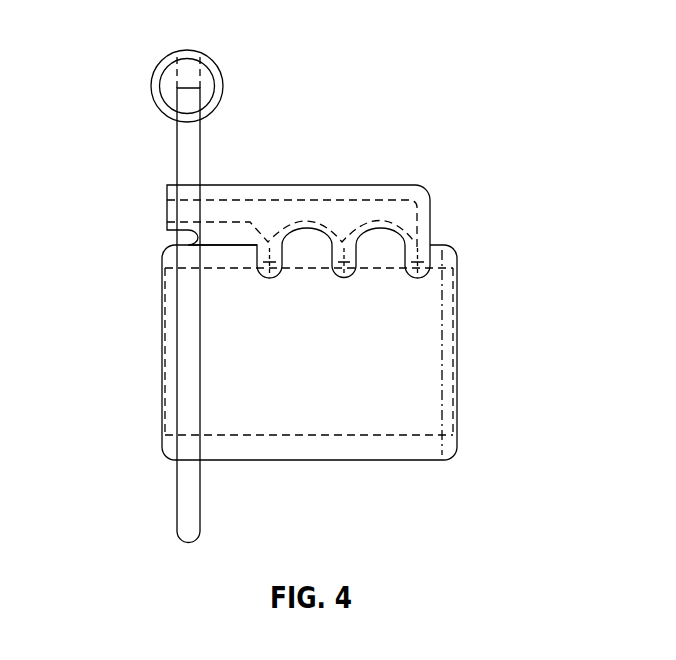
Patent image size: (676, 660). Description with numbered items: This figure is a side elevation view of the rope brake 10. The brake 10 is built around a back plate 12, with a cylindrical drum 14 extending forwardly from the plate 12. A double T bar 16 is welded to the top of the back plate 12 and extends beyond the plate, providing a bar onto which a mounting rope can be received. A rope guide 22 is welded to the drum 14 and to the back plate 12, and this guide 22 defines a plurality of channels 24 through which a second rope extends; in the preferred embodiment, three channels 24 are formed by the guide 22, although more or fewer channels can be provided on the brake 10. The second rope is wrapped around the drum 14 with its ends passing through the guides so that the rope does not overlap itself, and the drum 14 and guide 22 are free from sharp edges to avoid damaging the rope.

The rope brake 10 is at (446, 84).
The back plate 12 is at (187, 497).
The cylindrical drum 14 is at (395, 462).
The double T bar 16 is at (220, 83).
The rope guide 22 is at (362, 207).
The channels 24 is at (229, 288).